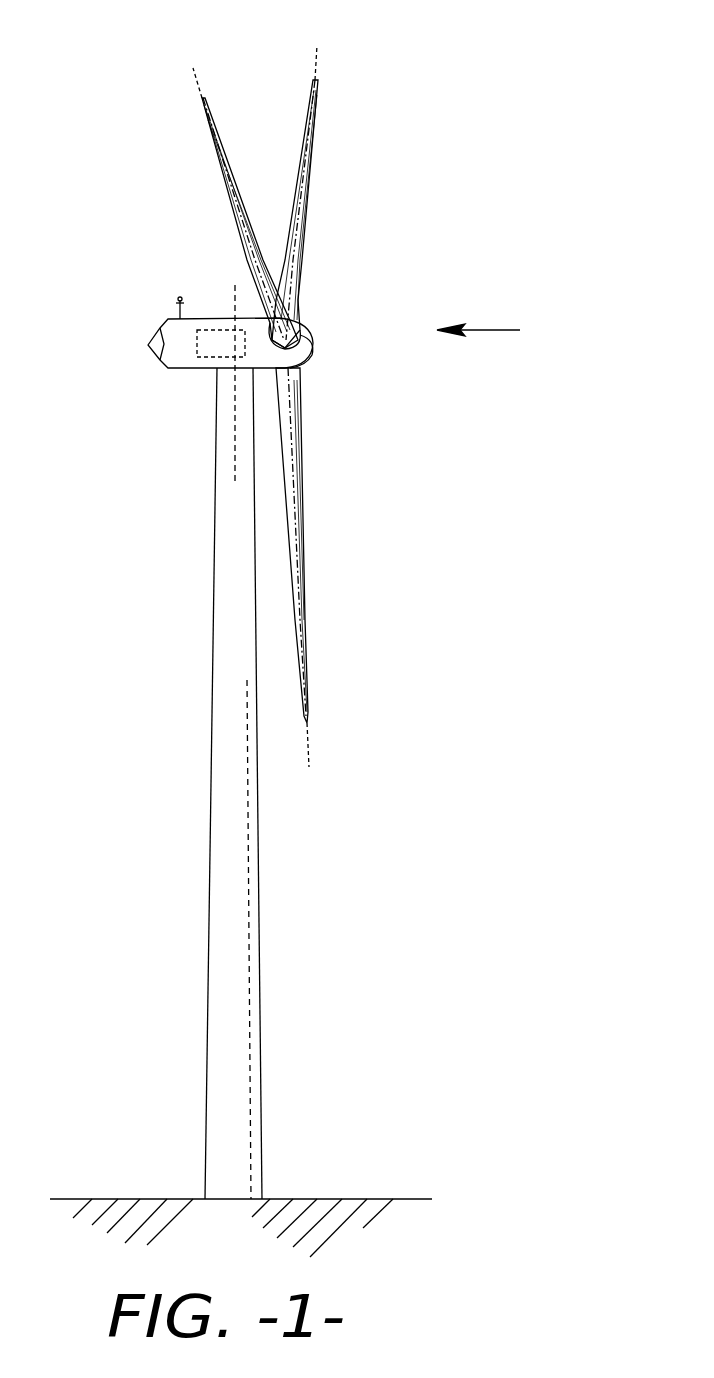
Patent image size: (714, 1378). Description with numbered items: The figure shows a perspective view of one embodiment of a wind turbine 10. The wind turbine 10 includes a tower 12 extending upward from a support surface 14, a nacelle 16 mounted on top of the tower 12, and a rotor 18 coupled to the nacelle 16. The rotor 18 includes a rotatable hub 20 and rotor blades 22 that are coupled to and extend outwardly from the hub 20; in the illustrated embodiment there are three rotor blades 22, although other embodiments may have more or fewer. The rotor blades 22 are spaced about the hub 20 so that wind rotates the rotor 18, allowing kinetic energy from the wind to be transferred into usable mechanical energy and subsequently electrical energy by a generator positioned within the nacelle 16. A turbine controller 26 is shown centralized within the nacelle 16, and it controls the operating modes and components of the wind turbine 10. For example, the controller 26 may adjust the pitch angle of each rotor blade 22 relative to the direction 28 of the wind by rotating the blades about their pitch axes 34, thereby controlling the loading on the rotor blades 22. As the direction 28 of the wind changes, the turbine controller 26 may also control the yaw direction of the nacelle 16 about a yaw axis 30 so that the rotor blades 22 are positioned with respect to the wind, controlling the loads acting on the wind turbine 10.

The wind turbine 10 is at (412, 160).
The tower 12 is at (212, 900).
The support surface 14 is at (132, 1197).
The nacelle 16 is at (195, 368).
The rotor 18 is at (318, 318).
The rotatable hub 20 is at (317, 348).
The rotor blade 22 is at (245, 190).
The turbine controller 26 is at (212, 318).
The direction of the wind 28 is at (492, 330).
The yaw axis 30 is at (233, 425).
The pitch axis 34 is at (195, 88).